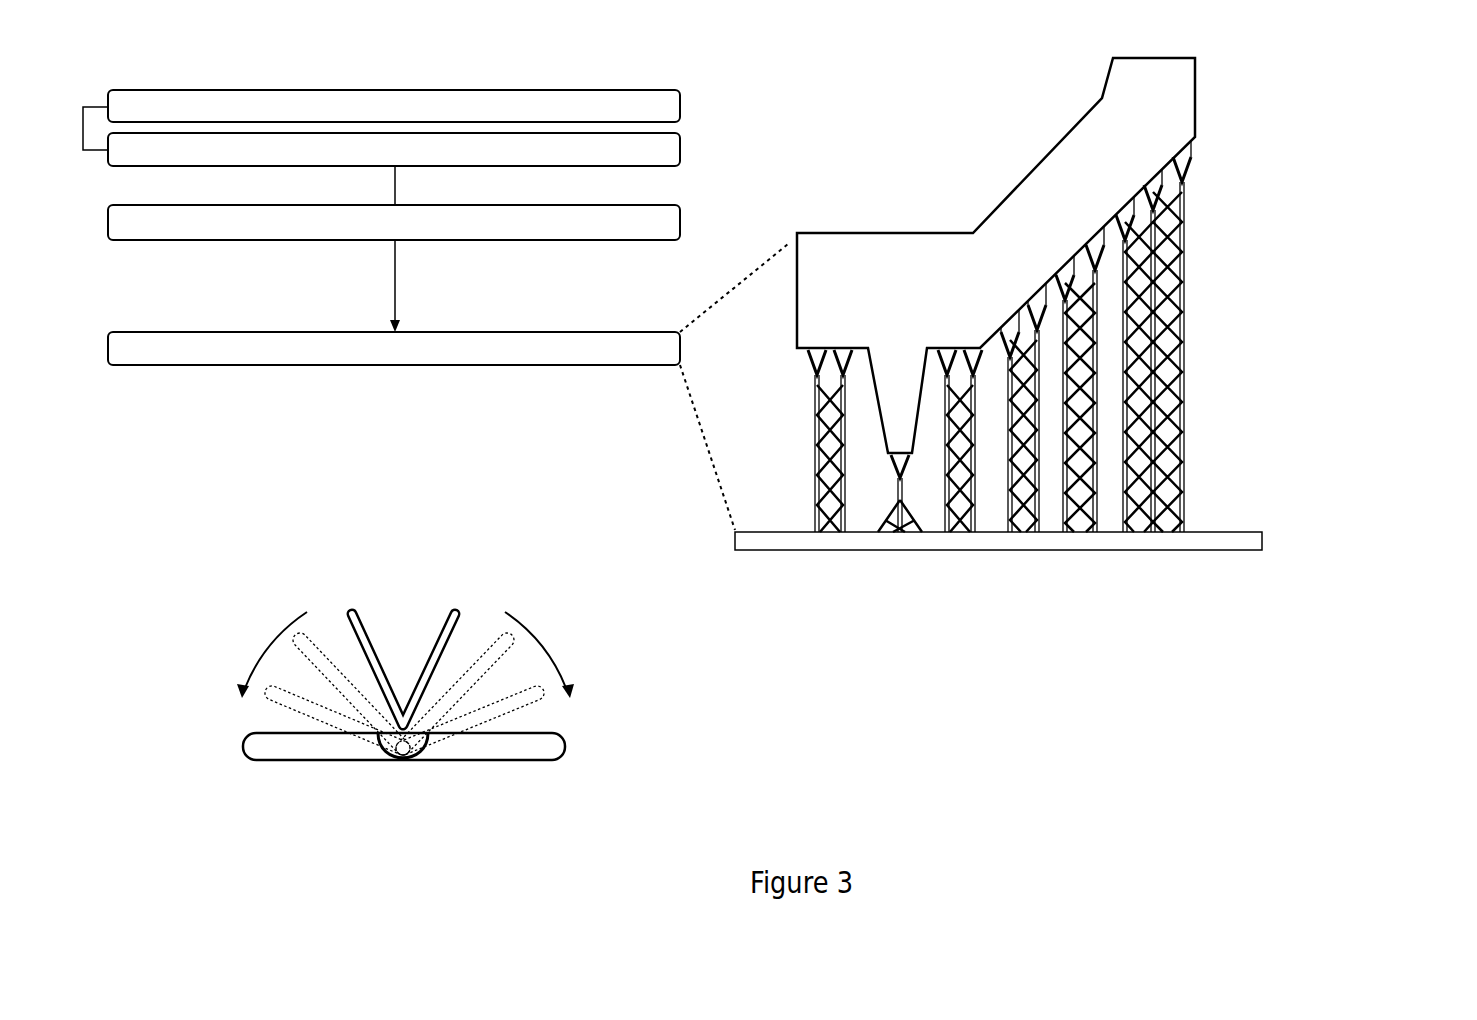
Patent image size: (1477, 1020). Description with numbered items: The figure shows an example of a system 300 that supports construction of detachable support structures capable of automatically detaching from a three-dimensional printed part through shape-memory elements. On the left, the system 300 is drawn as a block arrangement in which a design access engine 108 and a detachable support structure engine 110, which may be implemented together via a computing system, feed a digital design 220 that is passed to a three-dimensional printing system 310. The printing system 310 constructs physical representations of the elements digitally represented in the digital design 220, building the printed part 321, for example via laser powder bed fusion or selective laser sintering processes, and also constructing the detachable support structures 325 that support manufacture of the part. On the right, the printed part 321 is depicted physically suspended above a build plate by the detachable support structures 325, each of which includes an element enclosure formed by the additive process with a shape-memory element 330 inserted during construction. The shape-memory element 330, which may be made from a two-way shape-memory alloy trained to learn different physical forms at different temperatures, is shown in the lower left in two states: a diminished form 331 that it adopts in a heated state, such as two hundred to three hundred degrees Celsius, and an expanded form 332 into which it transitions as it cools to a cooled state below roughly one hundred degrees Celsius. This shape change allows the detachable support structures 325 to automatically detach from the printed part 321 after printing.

The system 300 is at (170, 66).
The design access engine 108 is at (394, 106).
The detachable support structure engine 110 is at (394, 149).
The digital design 220 is at (394, 222).
The 3D printing system 310 is at (448, 387).
The 3D printed part 321 is at (996, 255).
The detachable support structures 325 is at (1180, 497).
The shape-memory element 330 is at (620, 707).
The diminished form 331 is at (458, 604).
The expanded form 332 is at (515, 761).